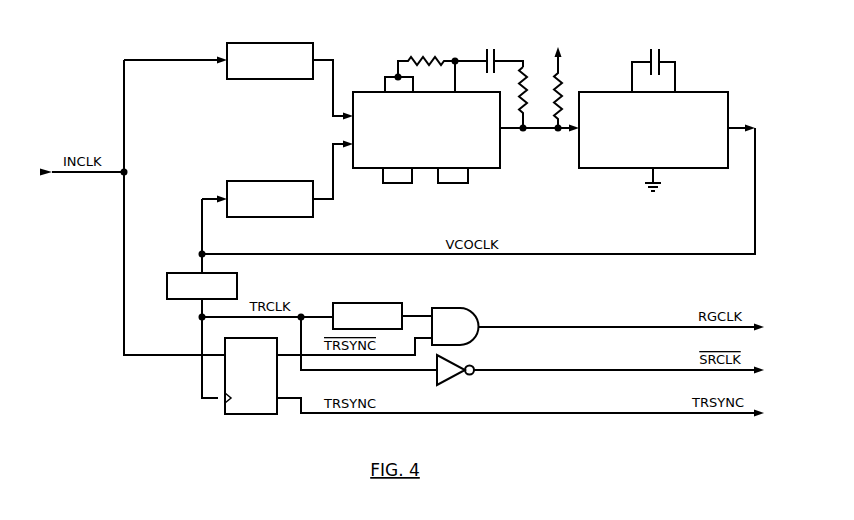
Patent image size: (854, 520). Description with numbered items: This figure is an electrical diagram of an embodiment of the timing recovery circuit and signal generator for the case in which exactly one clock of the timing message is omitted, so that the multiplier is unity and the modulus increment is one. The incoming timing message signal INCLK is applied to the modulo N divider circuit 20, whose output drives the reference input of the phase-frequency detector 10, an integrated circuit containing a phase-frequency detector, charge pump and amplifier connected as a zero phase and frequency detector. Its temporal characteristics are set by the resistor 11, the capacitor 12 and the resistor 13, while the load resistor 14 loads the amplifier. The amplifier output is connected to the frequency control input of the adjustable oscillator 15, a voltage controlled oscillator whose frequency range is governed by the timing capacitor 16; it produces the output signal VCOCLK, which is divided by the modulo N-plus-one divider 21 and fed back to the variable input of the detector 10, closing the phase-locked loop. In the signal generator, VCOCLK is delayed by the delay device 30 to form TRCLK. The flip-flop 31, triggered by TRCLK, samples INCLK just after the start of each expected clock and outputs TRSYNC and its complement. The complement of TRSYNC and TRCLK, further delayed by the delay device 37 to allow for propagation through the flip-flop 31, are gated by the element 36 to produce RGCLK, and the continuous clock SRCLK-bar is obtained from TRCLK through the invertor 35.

The phase-frequency detector 10 is at (486, 168).
The resistor 11 is at (422, 57).
The capacitor 12 is at (497, 53).
The resistor 13 is at (527, 88).
The load resistor 14 is at (563, 80).
The adjustable oscillator 15 is at (592, 168).
The timing capacitor 16 is at (662, 54).
The modulo N divider circuit 20 is at (293, 43).
The modulo N+1 divider 21 is at (293, 181).
The delay device 30 is at (182, 273).
The flip-flop 31 is at (265, 414).
The invertor 35 is at (445, 385).
The gating element 36 is at (455, 308).
The delay device 37 is at (380, 303).